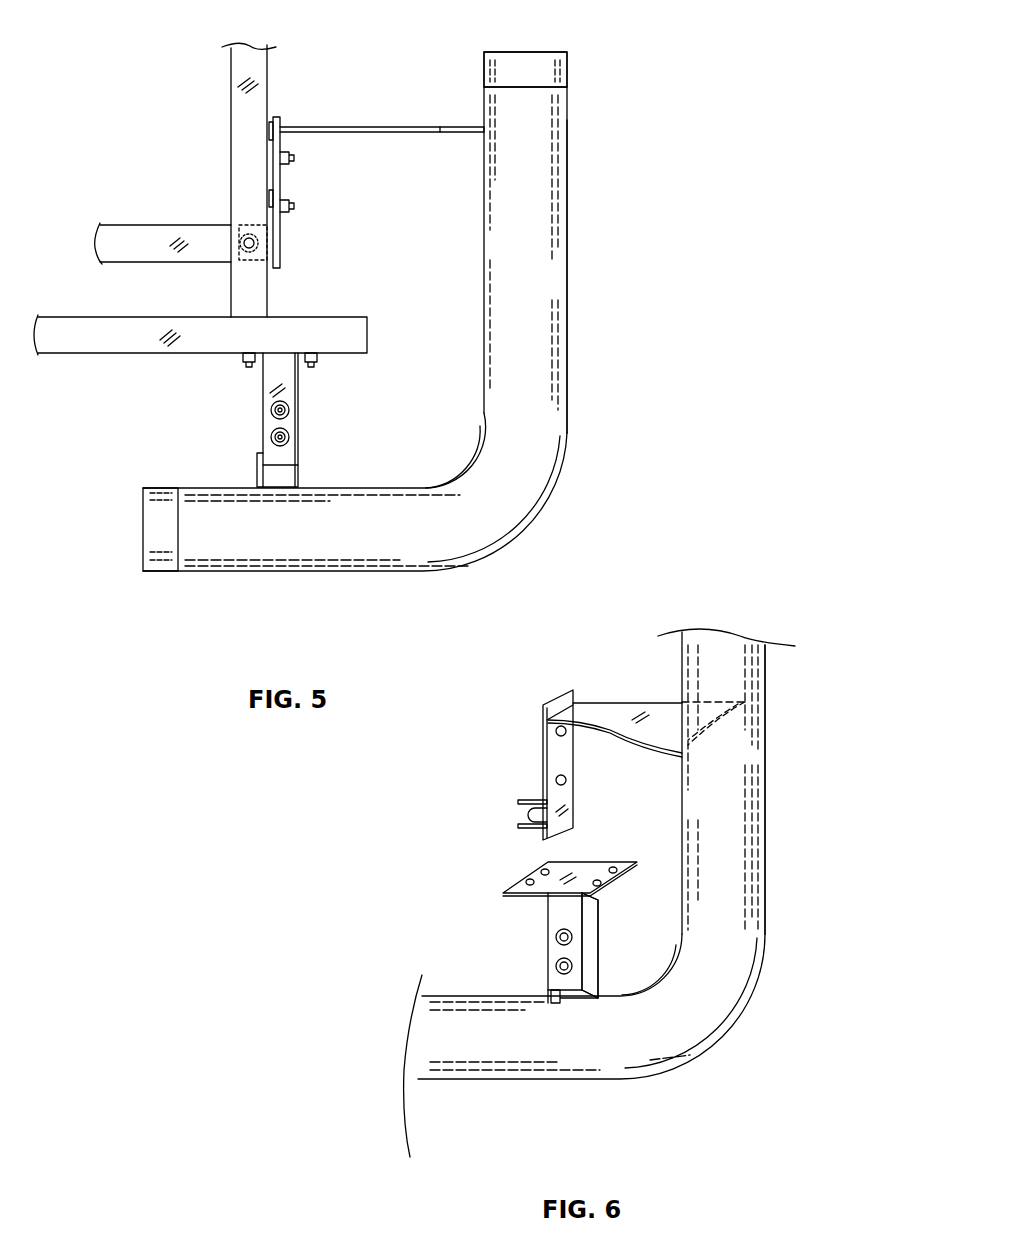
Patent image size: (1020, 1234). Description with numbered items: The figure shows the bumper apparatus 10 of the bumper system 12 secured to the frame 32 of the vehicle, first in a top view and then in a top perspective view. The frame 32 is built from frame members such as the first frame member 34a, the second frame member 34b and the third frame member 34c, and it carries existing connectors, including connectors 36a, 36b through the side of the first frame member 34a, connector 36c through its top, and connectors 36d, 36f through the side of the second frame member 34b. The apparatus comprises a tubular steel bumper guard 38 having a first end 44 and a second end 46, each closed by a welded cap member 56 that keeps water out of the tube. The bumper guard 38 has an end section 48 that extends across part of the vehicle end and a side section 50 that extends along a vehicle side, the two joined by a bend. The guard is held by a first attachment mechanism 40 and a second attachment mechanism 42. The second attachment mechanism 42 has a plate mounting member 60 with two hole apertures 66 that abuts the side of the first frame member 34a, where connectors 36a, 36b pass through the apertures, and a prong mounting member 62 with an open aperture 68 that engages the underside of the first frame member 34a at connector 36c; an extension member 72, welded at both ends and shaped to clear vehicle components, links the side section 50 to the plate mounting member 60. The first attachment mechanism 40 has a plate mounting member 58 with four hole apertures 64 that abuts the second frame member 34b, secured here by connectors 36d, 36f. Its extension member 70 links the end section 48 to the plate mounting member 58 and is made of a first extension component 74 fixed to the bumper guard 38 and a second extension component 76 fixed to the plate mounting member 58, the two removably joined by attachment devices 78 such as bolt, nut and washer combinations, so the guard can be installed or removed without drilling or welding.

In FIG. 5, the bumper apparatus 10 is at (425, 112).
In FIG. 6, the bumper apparatus 10 is at (790, 720).
In FIG. 5, the bumper system 12 is at (650, 165).
In FIG. 5, the frame 32 is at (130, 205).
In FIG. 5, the first frame member 34a is at (243, 60).
In FIG. 5, the second frame member 34b is at (92, 340).
In FIG. 5, the third frame member 34c is at (128, 248).
In FIG. 5, the connector 36a is at (295, 207).
In FIG. 5, the connector 36b is at (295, 158).
In FIG. 5, the connector 36c is at (243, 243).
In FIG. 5, the connector 36d is at (315, 362).
In FIG. 5, the connector 36f is at (248, 368).
In FIG. 5, the bumper guard 38 is at (550, 204).
In FIG. 6, the bumper guard 38 is at (748, 866).
In FIG. 5, the first attachment mechanism 40 is at (165, 440).
In FIG. 6, the first attachment mechanism 40 is at (425, 950).
In FIG. 5, the second attachment mechanism 42 is at (312, 112).
In FIG. 6, the second attachment mechanism 42 is at (532, 700).
In FIG. 5, the first end 44 is at (192, 580).
In FIG. 5, the second end 46 is at (592, 92).
In FIG. 5, the end section 48 is at (325, 582).
In FIG. 6, the end section 48 is at (492, 1095).
In FIG. 5, the side section 50 is at (590, 309).
In FIG. 6, the side section 50 is at (782, 800).
In FIG. 5, the cap member 56 is at (536, 60).
In FIG. 5, the plate mounting member 58 is at (283, 360).
In FIG. 6, the plate mounting member 58 is at (595, 880).
In FIG. 5, the plate mounting member 60 is at (282, 180).
In FIG. 6, the plate mounting member 60 is at (556, 749).
In FIG. 5, the prong mounting member 62 is at (257, 222).
In FIG. 6, the prong mounting member 62 is at (517, 802).
In FIG. 6, the hole apertures 64 is at (530, 882).
In FIG. 6, the hole apertures 66 is at (566, 782).
In FIG. 6, the open aperture 68 is at (519, 826).
In FIG. 6, the extension member 70 is at (530, 918).
In FIG. 6, the extension member 72 is at (613, 685).
In FIG. 6, the first extension component 74 is at (590, 990).
In FIG. 6, the second extension component 76 is at (590, 910).
In FIG. 5, the attachment devices 78 is at (292, 437).
In FIG. 6, the attachment devices 78 is at (556, 966).